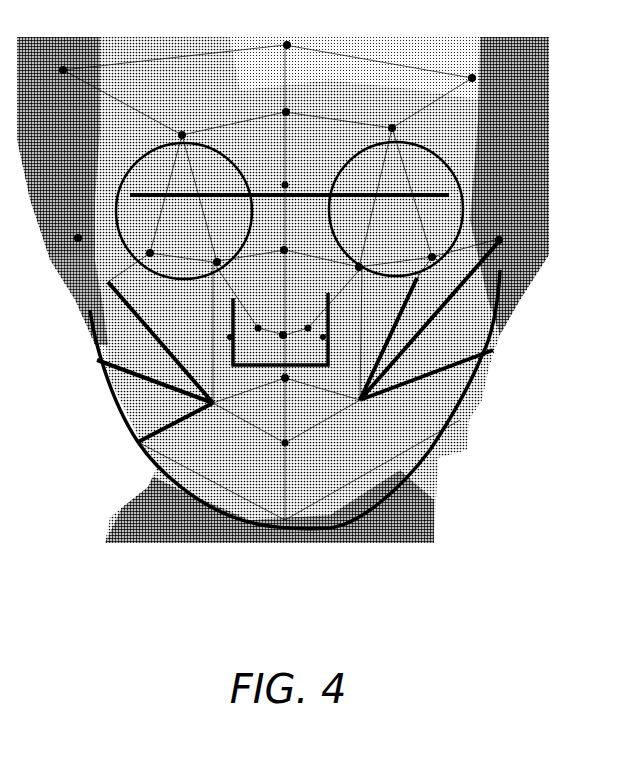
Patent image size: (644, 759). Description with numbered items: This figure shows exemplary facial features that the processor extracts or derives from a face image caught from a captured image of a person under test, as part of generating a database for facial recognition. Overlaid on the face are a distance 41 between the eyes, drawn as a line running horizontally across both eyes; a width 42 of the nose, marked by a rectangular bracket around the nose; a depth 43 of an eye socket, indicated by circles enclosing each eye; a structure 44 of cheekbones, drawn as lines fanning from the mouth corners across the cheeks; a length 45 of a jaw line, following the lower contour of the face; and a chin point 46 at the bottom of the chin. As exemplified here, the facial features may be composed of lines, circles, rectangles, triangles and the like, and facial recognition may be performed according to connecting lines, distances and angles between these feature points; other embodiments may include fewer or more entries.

The distance between the eyes 41 is at (307, 187).
The width of the nose 42 is at (322, 377).
The depth of an eye socket 43 is at (459, 194).
The structure of cheekbones 44 is at (440, 377).
The length of a jaw line 45 is at (197, 506).
The chin point 46 is at (283, 532).